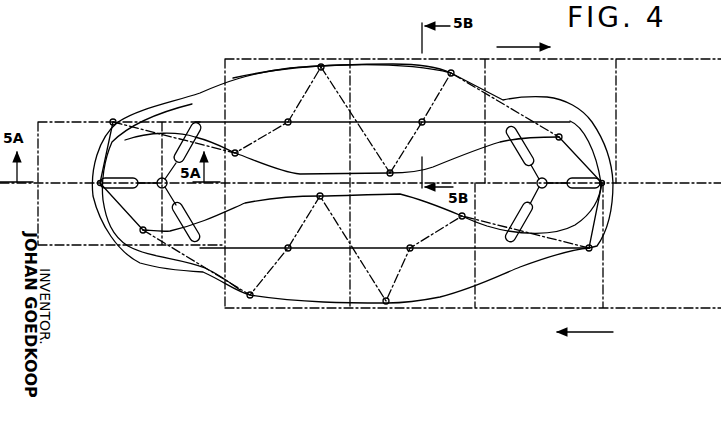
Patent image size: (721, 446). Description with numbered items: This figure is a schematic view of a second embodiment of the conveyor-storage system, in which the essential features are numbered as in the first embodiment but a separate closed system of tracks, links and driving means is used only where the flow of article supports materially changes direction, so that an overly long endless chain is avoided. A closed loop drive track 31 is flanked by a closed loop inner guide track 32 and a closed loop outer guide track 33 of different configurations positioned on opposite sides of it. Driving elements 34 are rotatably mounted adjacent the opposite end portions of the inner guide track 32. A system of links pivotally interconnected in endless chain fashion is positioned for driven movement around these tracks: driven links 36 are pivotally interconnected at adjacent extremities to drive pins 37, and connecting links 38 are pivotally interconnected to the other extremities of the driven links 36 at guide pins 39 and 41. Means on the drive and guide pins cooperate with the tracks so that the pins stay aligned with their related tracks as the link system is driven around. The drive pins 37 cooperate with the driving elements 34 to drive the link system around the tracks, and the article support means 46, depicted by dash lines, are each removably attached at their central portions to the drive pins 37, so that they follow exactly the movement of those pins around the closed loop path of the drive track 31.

The closed loop drive track 31 is at (405, 120).
The inner guide track 32 is at (343, 172).
The outer guide track 33 is at (403, 67).
The driving elements 34 is at (157, 178).
The driven links 36 is at (446, 84).
The drive pins 37 is at (288, 119).
The connecting links 38 is at (340, 97).
The guide pin 39 is at (239, 153).
The guide pin 41 is at (321, 64).
The article support means 46 is at (53, 121).